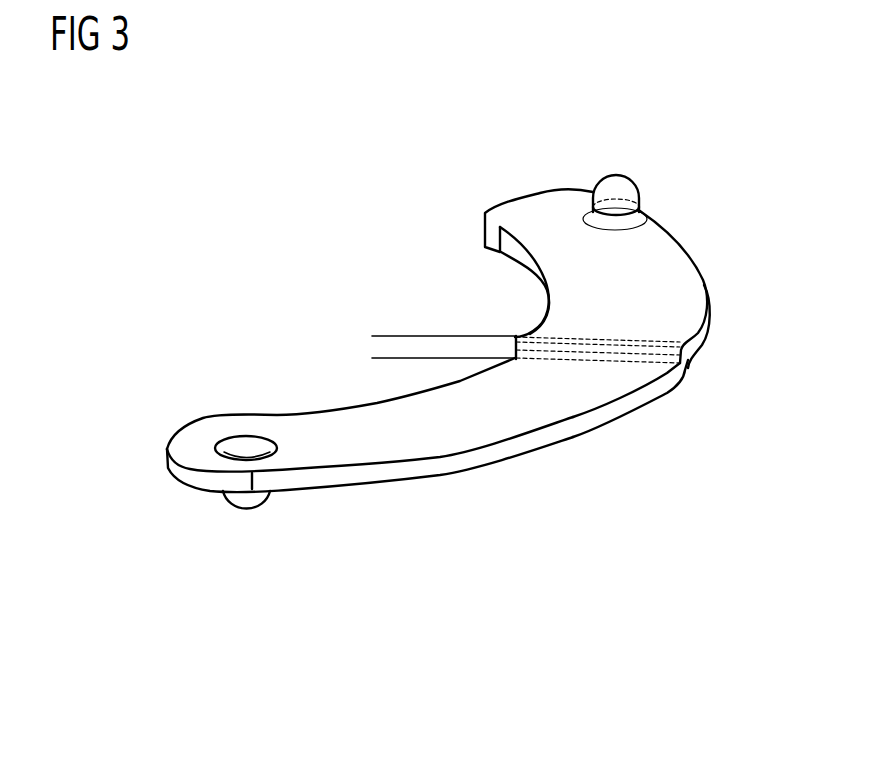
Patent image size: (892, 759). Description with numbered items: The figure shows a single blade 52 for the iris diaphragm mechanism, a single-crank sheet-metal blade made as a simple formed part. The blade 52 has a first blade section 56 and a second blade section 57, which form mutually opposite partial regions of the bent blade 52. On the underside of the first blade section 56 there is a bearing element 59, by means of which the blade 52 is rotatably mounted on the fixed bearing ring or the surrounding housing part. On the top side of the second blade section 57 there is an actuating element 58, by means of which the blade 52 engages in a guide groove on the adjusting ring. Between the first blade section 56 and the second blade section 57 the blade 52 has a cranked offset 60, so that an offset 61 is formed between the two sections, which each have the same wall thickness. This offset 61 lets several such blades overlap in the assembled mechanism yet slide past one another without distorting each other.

The blade 52 is at (454, 353).
The first blade section 56 is at (395, 482).
The second blade section 57 is at (642, 234).
The actuating element 58 is at (616, 187).
The bearing element 59 is at (190, 502).
The cranked offset 60 is at (712, 387).
The offset 61 is at (383, 303).